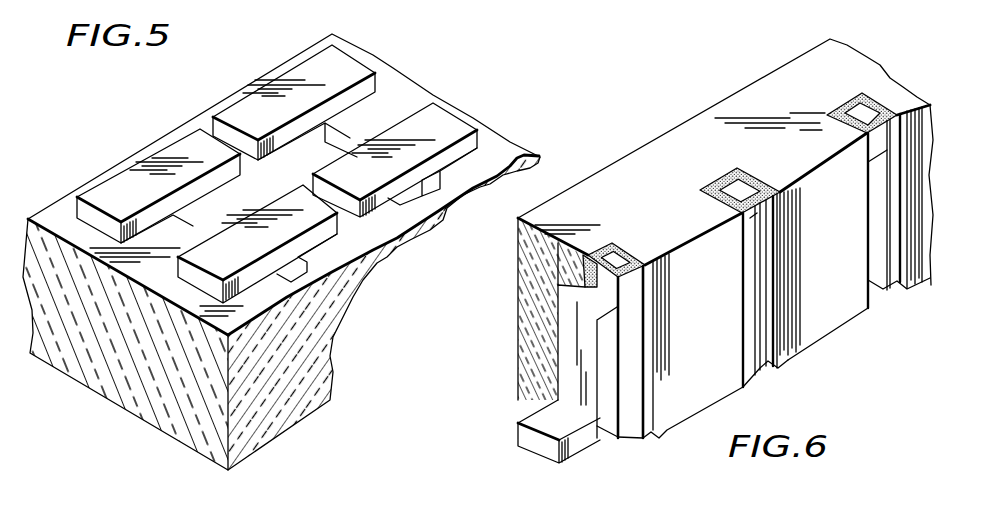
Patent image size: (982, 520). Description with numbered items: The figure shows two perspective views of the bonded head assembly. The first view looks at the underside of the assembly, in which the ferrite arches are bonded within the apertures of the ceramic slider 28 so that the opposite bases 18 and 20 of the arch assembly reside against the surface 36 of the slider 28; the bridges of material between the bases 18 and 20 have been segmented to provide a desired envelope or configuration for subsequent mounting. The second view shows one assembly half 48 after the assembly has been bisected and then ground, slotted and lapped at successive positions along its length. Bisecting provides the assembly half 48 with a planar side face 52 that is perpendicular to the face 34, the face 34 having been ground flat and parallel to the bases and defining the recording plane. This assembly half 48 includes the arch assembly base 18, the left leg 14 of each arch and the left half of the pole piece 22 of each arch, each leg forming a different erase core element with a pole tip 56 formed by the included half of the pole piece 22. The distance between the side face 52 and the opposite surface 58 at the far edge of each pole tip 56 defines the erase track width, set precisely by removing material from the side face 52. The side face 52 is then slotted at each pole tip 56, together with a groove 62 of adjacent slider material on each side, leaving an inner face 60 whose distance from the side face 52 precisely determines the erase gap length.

In FIG. 6, the left leg 14 is at (563, 385).
In FIG. 5, the arch assembly base 18 is at (100, 193).
In FIG. 6, the arch assembly base 18 is at (520, 422).
In FIG. 5, the base 20 is at (323, 240).
In FIG. 6, the pole piece 22 is at (615, 260).
In FIG. 5, the ceramic slider 28 is at (488, 118).
In FIG. 6, the face 34 is at (747, 103).
In FIG. 5, the surface 36 is at (400, 87).
In FIG. 6, the assembly half 48 is at (673, 130).
In FIG. 6, the planar side face 52 is at (820, 325).
In FIG. 6, the pole tip 56 is at (593, 283).
In FIG. 6, the opposite surface 58 is at (598, 257).
In FIG. 6, the inner face 60 is at (700, 270).
In FIG. 6, the groove 62 is at (647, 437).